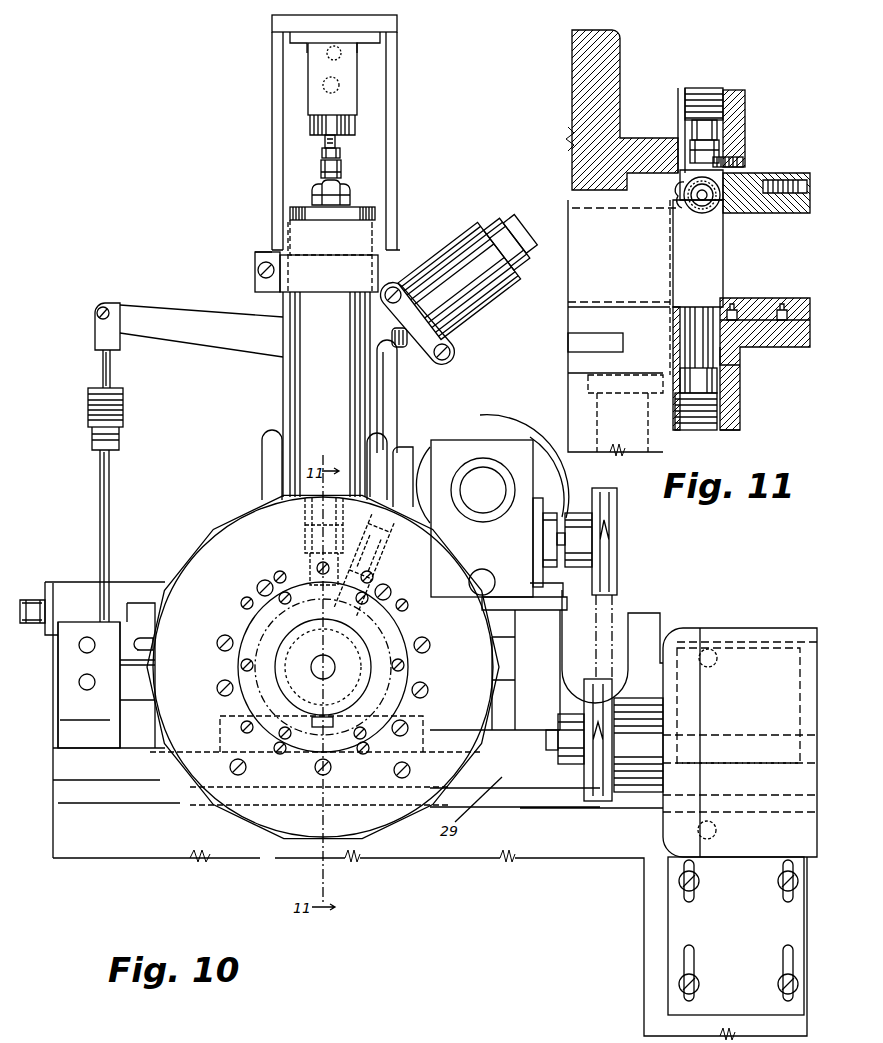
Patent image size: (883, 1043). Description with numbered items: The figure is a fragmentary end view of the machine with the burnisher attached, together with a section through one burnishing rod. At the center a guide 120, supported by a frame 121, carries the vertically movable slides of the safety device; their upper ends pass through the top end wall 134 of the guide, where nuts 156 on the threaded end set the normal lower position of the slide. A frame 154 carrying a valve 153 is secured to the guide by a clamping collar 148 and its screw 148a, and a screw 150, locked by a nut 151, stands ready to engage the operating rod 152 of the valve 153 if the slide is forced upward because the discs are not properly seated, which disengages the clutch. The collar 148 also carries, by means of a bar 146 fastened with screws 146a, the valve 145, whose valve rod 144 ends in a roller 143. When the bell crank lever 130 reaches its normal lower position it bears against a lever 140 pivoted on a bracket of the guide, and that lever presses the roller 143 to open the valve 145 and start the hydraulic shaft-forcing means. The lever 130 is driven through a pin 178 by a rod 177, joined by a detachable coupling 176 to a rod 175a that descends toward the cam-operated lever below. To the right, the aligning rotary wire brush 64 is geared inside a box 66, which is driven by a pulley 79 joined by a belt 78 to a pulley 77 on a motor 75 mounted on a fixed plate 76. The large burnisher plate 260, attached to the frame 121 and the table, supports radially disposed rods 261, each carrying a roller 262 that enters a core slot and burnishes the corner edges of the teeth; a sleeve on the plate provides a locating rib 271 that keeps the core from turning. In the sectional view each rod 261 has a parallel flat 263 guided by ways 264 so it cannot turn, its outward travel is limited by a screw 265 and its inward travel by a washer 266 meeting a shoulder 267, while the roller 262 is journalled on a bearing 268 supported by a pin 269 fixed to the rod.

In FIG. 10, the frame 154 is at (398, 23).
In FIG. 10, the valve 153 is at (350, 105).
In FIG. 10, the operating rod 152 is at (336, 141).
In FIG. 10, the screw 150 is at (340, 153).
In FIG. 10, the nut 151 is at (341, 166).
In FIG. 10, the nuts 156 is at (348, 192).
In FIG. 10, the top end wall 134 is at (291, 213).
In FIG. 10, the clamping collar 148 is at (256, 262).
In FIG. 10, the screw 148a is at (256, 280).
In FIG. 10, the guide 120 is at (290, 408).
In FIG. 10, the frame 121 is at (263, 458).
In FIG. 10, the lever 140 is at (395, 378).
In FIG. 10, the valve rod 144 is at (401, 348).
In FIG. 10, the roller 143 is at (375, 331).
In FIG. 10, the valve 145 is at (485, 226).
In FIG. 10, the bar 146 is at (418, 316).
In FIG. 10, the screws 146a is at (452, 351).
In FIG. 10, the bell crank lever 130 is at (166, 312).
In FIG. 10, the pin 178 is at (98, 308).
In FIG. 10, the rod 177 is at (103, 369).
In FIG. 10, the detachable coupling 176 is at (89, 405).
In FIG. 10, the rod 175a is at (100, 521).
In FIG. 10, the plate 260 is at (220, 535).
In FIG. 11, the plate 260 is at (733, 418).
In FIG. 10, the screw 265 is at (306, 520).
In FIG. 11, the screw 265 is at (710, 96).
In FIG. 10, the rods 261 is at (313, 558).
In FIG. 11, the rods 261 is at (688, 150).
In FIG. 10, the roller 262 is at (315, 617).
In FIG. 11, the roller 262 is at (714, 210).
In FIG. 10, the locating rib 271 is at (320, 728).
In FIG. 10, the gear box 66 is at (470, 440).
In FIG. 10, the rotary wire brush 64 is at (490, 432).
In FIG. 10, the pulley 79 is at (617, 500).
In FIG. 10, the belt 78 is at (600, 626).
In FIG. 10, the pulley 77 is at (588, 684).
In FIG. 10, the motor 75 is at (769, 632).
In FIG. 10, the fixed plate 76 is at (701, 918).
In FIG. 11, the shoulder 267 is at (720, 130).
In FIG. 11, the washer 266 is at (721, 142).
In FIG. 11, the parallel flat 263 is at (738, 160).
In FIG. 11, the ways 264 is at (738, 178).
In FIG. 11, the bearing 268 is at (700, 213).
In FIG. 11, the pin 269 is at (681, 200).